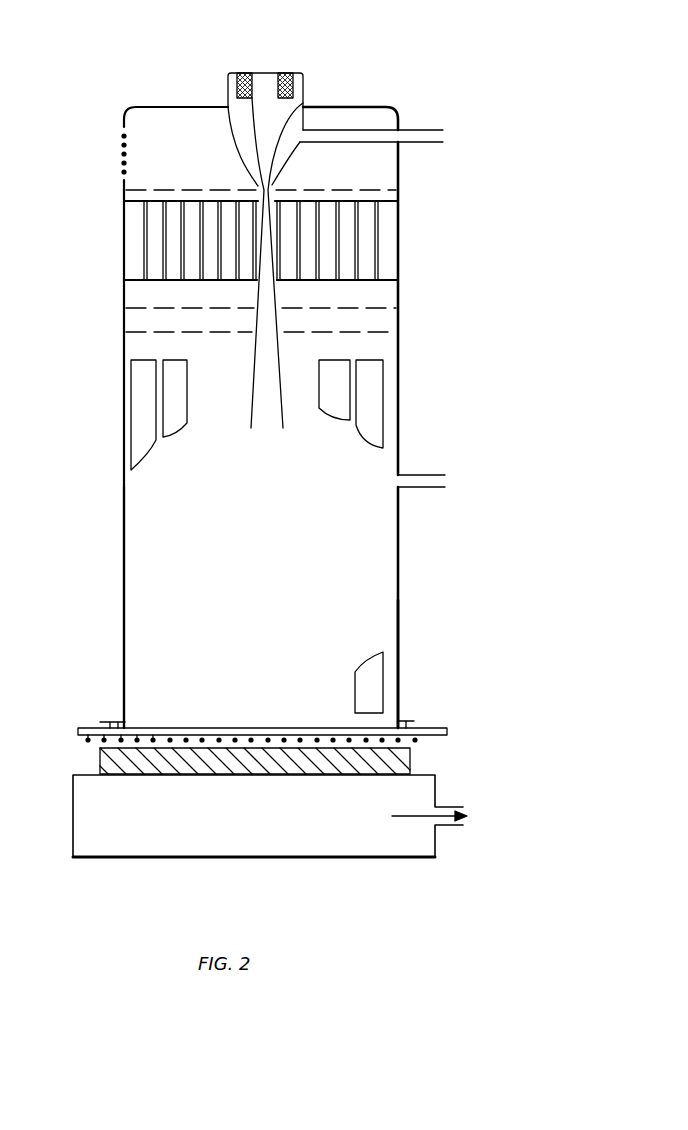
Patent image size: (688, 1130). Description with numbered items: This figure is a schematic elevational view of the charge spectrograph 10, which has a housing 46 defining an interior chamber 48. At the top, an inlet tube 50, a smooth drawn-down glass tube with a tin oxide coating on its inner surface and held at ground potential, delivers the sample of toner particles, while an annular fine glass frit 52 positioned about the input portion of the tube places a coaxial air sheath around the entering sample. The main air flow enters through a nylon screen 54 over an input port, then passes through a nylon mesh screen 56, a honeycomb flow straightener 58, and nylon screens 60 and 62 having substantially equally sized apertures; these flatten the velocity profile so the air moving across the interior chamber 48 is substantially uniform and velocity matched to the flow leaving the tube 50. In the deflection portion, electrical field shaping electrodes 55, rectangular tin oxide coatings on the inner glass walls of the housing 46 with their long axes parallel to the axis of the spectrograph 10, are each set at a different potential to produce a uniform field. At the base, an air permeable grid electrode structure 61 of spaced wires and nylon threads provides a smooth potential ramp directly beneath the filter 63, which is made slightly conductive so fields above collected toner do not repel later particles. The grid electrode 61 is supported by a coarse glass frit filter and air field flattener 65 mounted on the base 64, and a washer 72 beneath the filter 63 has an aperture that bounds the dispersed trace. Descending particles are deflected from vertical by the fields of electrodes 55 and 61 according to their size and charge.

The charge spectrograph 10 is at (463, 322).
The housing 46 is at (398, 657).
The interior chamber 48 is at (383, 593).
The inlet tube 50 is at (300, 110).
The annular fine glass frit 52 is at (302, 72).
The nylon screen 54 is at (117, 164).
The electrical field shaping electrodes 55 is at (375, 413).
The nylon mesh screen 56 is at (178, 190).
The honeycomb flow straightener 58 is at (126, 248).
The nylon screen 60 is at (385, 310).
The grid electrode structure 61 is at (373, 723).
The nylon screen 62 is at (124, 332).
The filter 63 is at (442, 727).
The base 64 is at (433, 857).
The coarse glass frit filter and air field flattener 65 is at (410, 762).
The washer 72 is at (93, 742).